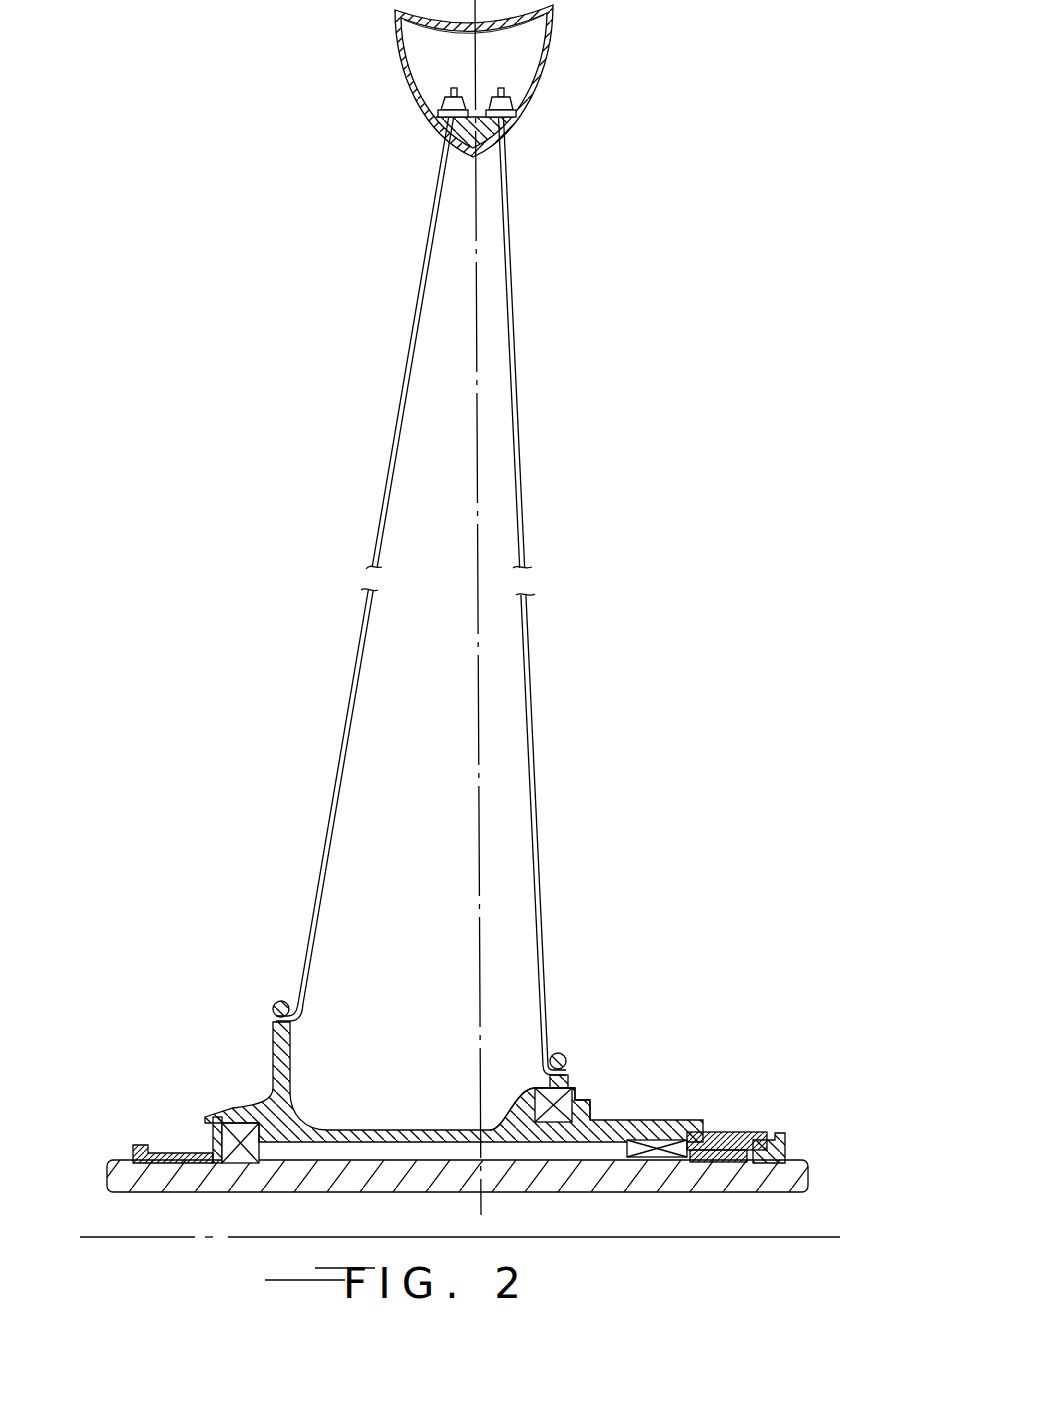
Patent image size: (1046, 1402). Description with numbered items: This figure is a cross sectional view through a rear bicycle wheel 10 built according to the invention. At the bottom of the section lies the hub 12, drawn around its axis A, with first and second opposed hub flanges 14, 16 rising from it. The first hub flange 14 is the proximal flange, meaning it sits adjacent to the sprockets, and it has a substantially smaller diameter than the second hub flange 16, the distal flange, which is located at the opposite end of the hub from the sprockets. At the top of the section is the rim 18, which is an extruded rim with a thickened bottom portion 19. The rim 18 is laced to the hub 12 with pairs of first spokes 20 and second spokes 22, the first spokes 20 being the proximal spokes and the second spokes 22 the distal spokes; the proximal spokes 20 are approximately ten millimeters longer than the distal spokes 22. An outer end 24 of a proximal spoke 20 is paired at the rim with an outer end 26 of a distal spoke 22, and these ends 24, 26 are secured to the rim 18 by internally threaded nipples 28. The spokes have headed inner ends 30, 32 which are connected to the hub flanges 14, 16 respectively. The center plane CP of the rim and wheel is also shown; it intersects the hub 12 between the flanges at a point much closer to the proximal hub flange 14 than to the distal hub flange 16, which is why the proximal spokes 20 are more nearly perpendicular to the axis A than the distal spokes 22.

The rear wheel 10 is at (460, 650).
The hub 12 is at (457, 1047).
The first hub flange 14 is at (560, 1048).
The second hub flange 16 is at (272, 1060).
The rim 18 is at (476, 149).
The thickened bottom portion 19 is at (465, 158).
The first spokes 20 is at (521, 396).
The second spokes 22 is at (400, 383).
The outer end 24 is at (508, 92).
The outer end 26 is at (443, 100).
The nipples 28 is at (474, 98).
The headed inner end 30 is at (570, 1073).
The headed inner end 32 is at (270, 1018).
The center plane CP is at (481, 523).
The axis A is at (148, 1237).